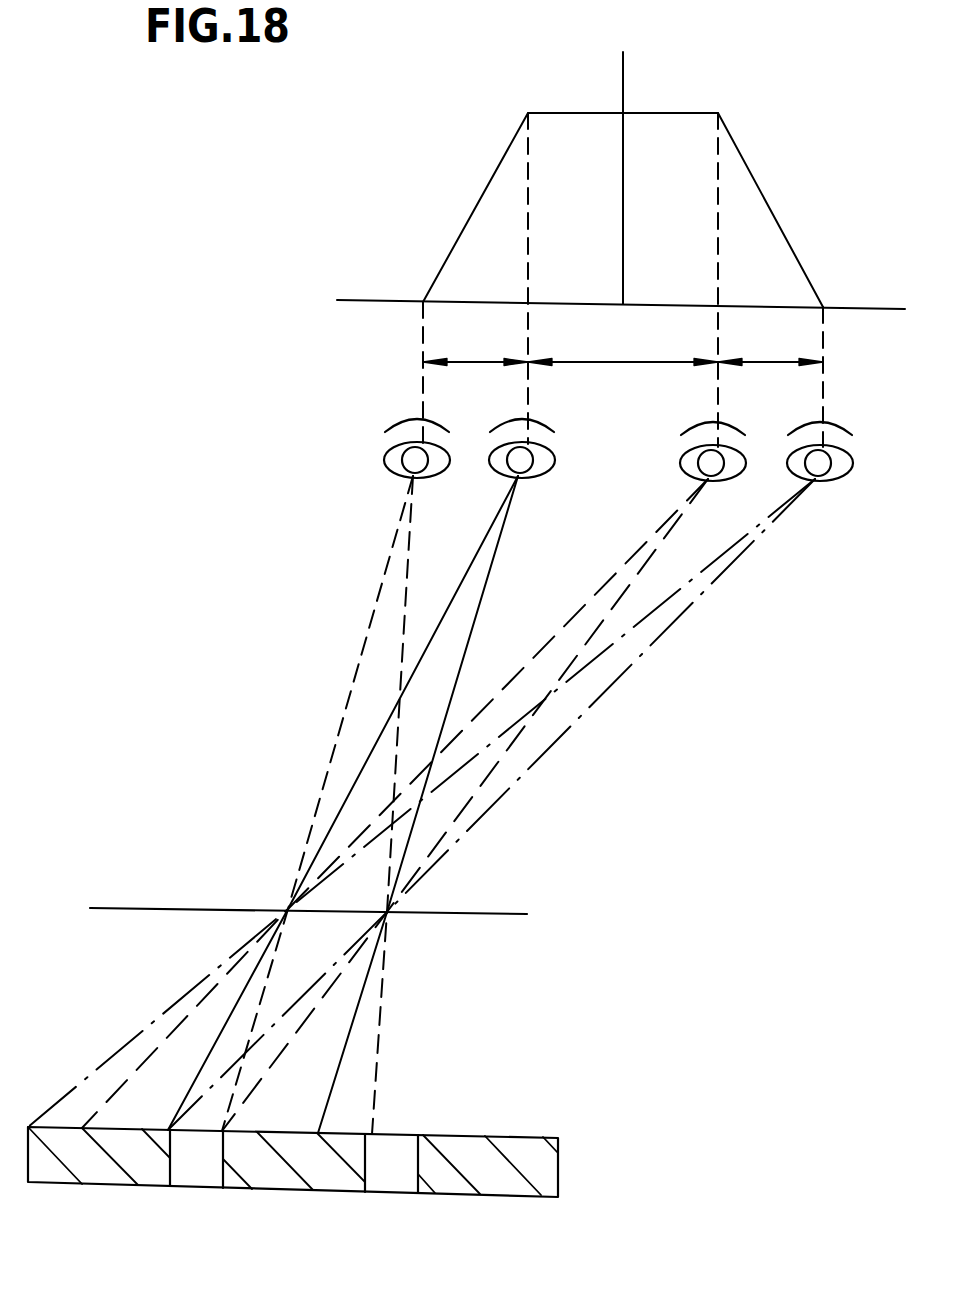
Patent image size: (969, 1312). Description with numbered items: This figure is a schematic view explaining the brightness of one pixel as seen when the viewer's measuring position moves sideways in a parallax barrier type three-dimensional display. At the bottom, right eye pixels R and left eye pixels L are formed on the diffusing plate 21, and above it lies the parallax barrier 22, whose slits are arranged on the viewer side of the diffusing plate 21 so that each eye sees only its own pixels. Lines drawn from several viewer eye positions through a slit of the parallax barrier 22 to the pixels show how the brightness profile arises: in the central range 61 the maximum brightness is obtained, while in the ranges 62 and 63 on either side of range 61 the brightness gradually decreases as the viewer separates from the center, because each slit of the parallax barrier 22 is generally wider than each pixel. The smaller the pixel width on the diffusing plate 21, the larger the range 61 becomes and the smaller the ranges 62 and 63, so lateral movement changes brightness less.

The diffusing plate 21 is at (556, 1137).
The parallax barrier 22 is at (522, 913).
The range of maximum brightness 61 is at (623, 344).
The left-side range of decreasing brightness 62 is at (475, 344).
The right-side range of decreasing brightness 63 is at (770, 344).